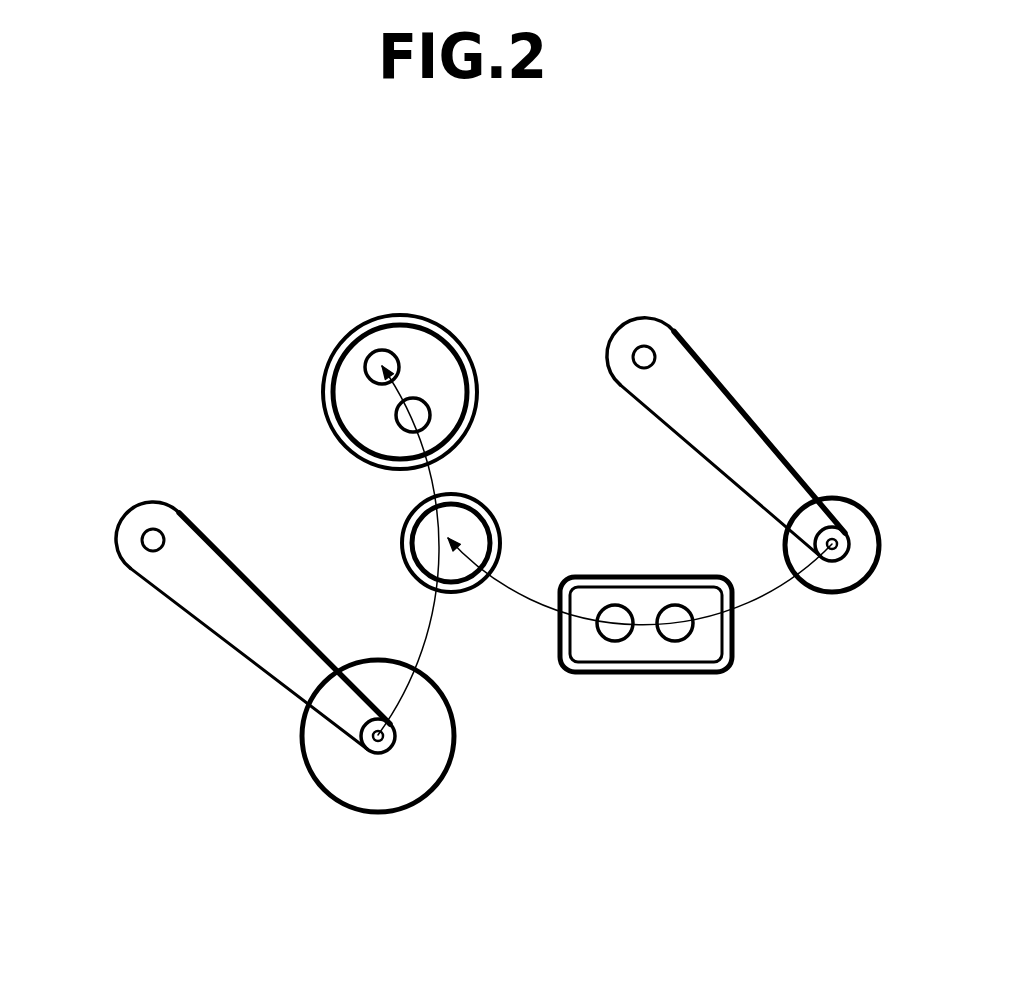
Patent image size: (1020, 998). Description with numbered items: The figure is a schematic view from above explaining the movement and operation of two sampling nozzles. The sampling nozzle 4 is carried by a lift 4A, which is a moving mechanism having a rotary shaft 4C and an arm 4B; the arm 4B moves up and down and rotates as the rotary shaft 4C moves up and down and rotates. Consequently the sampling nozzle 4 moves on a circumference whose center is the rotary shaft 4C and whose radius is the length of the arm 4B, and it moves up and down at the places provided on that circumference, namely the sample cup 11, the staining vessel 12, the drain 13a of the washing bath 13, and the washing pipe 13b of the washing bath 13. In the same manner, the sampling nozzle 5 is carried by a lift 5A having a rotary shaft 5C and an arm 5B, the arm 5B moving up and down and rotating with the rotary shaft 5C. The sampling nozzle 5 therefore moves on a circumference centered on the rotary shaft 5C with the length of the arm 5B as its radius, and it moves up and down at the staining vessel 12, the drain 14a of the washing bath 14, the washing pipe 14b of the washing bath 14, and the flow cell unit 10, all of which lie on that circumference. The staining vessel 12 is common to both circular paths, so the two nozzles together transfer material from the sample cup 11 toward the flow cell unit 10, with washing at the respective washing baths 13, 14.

The sampling nozzle 4 is at (360, 748).
The lift 4A is at (152, 620).
The arm 4B is at (240, 655).
The rotary shaft 4C is at (163, 530).
The sampling nozzle 5 is at (852, 517).
The lift 5A is at (733, 325).
The arm 5B is at (770, 432).
The rotary shaft 5C is at (646, 345).
The flow cell unit 10 is at (845, 591).
The sample cup 11 is at (413, 800).
The staining vessel 12 is at (497, 515).
The washing bath 13 is at (397, 313).
The drain 13a is at (397, 420).
The washing pipe 13b is at (360, 353).
The washing bath 14 is at (675, 577).
The drain 14a is at (680, 643).
The washing pipe 14b is at (610, 643).